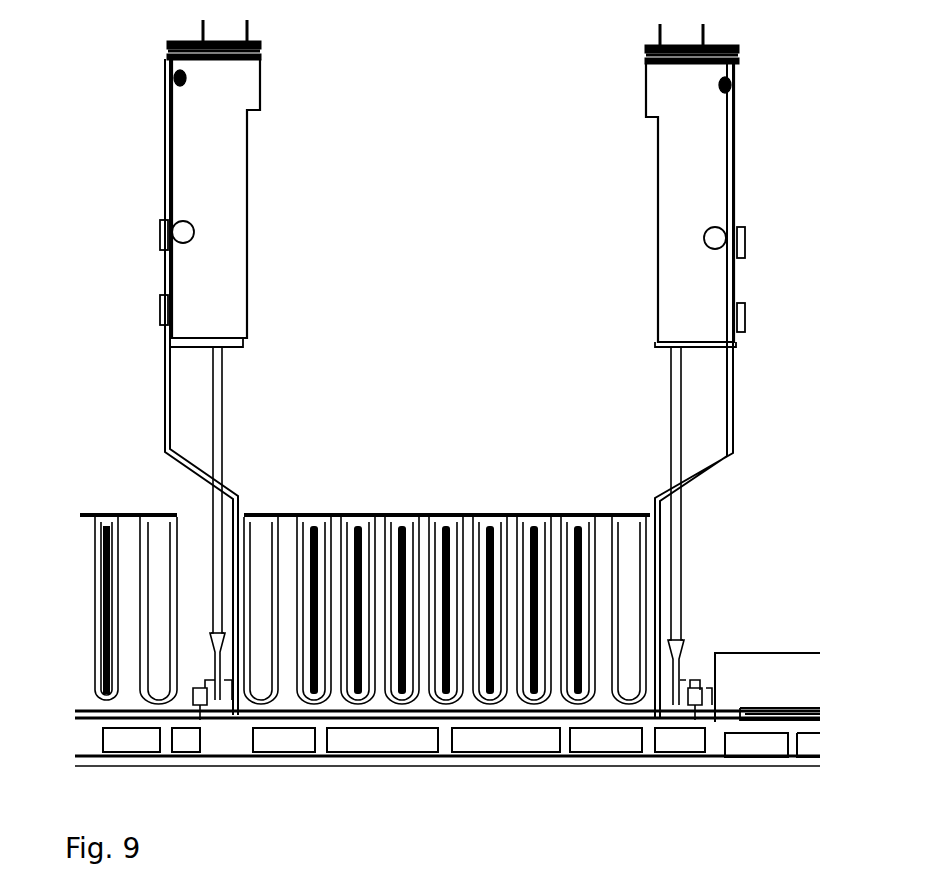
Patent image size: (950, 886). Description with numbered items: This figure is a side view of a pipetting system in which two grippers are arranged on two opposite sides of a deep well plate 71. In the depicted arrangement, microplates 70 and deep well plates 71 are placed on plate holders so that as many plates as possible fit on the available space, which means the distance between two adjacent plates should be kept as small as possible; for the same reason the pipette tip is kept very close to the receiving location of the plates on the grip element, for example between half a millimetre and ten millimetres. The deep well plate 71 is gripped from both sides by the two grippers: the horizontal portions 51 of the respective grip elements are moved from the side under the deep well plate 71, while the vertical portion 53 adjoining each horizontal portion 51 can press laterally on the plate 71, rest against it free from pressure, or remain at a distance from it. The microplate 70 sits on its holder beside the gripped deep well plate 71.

The deep well plate 71 is at (425, 540).
The microplate 70 is at (778, 680).
The vertical portion 53 is at (237, 526).
The horizontal portion 51 is at (233, 727).